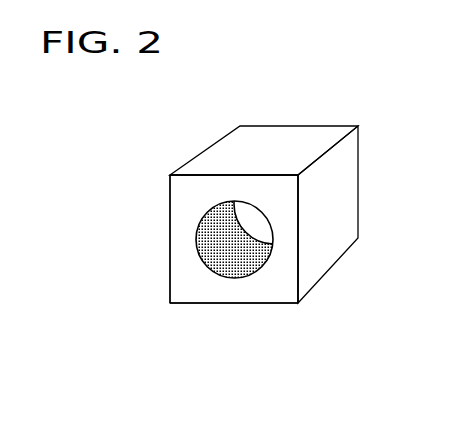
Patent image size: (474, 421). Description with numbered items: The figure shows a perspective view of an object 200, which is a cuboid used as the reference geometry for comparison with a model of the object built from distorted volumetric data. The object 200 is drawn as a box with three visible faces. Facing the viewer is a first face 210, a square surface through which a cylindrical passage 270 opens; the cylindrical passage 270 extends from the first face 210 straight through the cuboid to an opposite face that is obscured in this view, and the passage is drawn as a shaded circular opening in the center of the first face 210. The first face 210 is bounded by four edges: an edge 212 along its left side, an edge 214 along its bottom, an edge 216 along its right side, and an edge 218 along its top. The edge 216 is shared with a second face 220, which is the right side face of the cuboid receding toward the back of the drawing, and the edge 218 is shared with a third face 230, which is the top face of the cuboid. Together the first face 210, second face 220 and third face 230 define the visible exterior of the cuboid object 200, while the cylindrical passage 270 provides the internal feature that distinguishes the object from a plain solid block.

The object 200 is at (264, 216).
The first face 210 is at (192, 292).
The edge 212 is at (170, 247).
The edge 214 is at (263, 305).
The edge 216 is at (300, 282).
The edge 218 is at (213, 175).
The second face 220 is at (322, 230).
The third face 230 is at (267, 142).
The cylindrical passage 270 is at (224, 233).